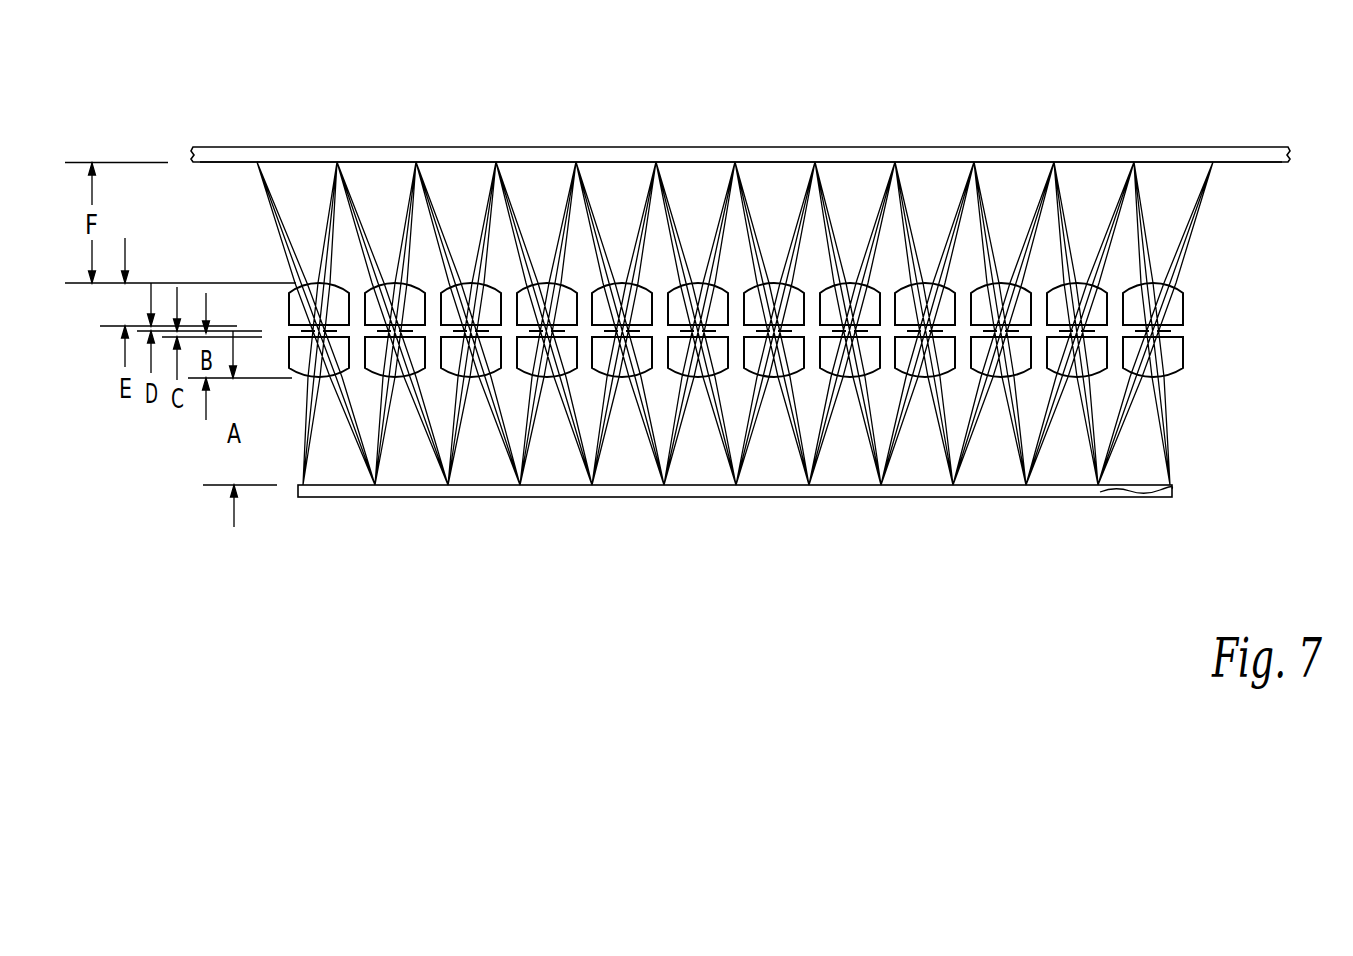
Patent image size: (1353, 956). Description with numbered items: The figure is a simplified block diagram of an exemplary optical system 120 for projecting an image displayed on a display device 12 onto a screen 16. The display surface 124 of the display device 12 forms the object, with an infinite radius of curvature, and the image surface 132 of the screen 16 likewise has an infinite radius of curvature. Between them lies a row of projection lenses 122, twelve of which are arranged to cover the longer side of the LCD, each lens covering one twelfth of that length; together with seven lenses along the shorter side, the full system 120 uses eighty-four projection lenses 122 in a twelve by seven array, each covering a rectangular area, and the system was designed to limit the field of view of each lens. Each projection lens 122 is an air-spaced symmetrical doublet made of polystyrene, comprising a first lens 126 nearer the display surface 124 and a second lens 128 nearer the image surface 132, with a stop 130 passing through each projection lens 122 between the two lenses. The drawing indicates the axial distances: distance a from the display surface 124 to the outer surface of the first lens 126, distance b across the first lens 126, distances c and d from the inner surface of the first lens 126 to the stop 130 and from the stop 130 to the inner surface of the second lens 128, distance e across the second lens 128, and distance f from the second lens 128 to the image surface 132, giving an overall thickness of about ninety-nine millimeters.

The optical system 120 is at (188, 103).
The screen 16 is at (1275, 150).
The image surface 132 is at (1245, 163).
The projection lens 122 is at (407, 283).
The second lens 128 is at (1173, 257).
The first lens 126 is at (1173, 375).
The stop 130 is at (1188, 311).
The display device 12 is at (1068, 498).
The display surface 124 is at (1133, 492).